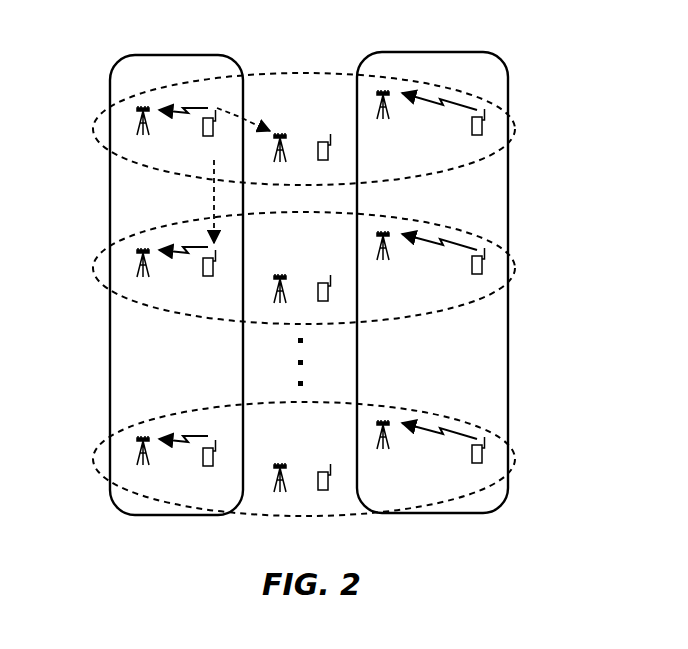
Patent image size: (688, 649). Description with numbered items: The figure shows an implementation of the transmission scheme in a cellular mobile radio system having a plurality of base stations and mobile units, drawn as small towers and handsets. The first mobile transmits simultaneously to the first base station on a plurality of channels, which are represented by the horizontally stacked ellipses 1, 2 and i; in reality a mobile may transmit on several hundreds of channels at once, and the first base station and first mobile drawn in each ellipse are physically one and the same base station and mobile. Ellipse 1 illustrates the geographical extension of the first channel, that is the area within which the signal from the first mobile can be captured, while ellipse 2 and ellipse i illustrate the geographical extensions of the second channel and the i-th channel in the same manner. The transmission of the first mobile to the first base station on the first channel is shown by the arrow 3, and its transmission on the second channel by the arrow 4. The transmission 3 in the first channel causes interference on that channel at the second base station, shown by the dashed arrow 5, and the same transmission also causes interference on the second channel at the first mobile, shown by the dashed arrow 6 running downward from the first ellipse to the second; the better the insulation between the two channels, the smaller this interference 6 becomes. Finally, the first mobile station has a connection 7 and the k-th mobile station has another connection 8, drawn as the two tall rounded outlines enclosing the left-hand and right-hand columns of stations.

The ellipse 1 is at (98, 118).
The ellipse 2 is at (137, 303).
The ellipse i is at (105, 443).
The arrow 3 is at (177, 107).
The arrow 4 is at (160, 250).
The arrow 5 is at (250, 120).
The arrow 6 is at (215, 205).
The connection 7 is at (108, 368).
The connection 8 is at (508, 393).